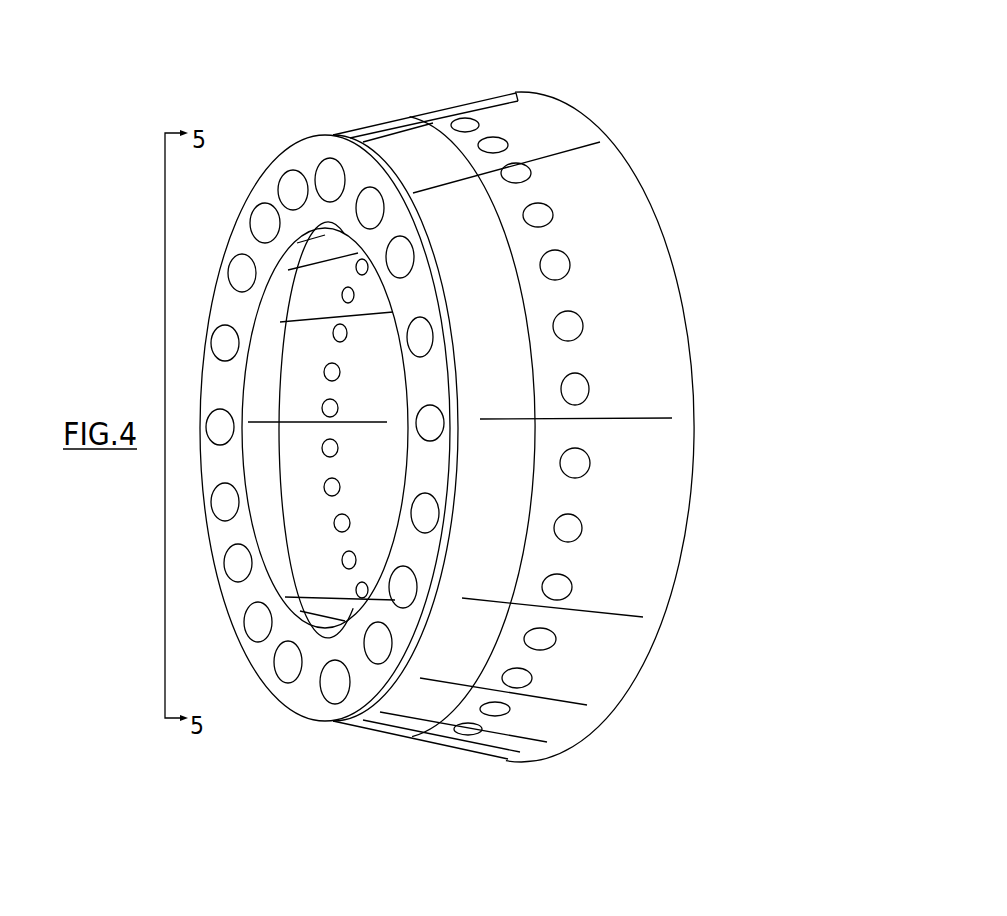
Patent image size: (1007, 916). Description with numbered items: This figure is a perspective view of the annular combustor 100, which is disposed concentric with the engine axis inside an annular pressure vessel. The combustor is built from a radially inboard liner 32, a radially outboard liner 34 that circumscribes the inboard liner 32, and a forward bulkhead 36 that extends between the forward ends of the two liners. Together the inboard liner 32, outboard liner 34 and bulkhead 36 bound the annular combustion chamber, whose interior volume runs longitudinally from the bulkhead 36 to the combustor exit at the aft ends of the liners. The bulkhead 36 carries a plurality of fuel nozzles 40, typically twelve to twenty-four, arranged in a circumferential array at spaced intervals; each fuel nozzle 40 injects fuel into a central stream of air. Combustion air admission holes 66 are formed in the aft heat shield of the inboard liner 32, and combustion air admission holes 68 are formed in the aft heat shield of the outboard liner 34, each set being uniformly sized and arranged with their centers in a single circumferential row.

The annular combustor 100 is at (440, 80).
The radially inboard liner 32 is at (300, 335).
The radially outboard liner 34 is at (618, 672).
The forward bulkhead 36 is at (271, 152).
The fuel nozzle 40 is at (333, 166).
The combustion air admission holes 66 is at (336, 408).
The combustion air admission holes 68 is at (570, 528).